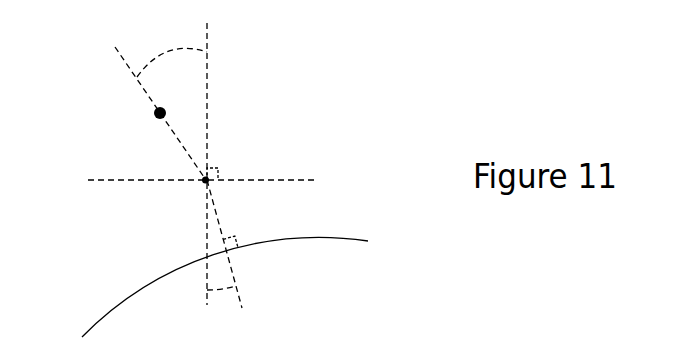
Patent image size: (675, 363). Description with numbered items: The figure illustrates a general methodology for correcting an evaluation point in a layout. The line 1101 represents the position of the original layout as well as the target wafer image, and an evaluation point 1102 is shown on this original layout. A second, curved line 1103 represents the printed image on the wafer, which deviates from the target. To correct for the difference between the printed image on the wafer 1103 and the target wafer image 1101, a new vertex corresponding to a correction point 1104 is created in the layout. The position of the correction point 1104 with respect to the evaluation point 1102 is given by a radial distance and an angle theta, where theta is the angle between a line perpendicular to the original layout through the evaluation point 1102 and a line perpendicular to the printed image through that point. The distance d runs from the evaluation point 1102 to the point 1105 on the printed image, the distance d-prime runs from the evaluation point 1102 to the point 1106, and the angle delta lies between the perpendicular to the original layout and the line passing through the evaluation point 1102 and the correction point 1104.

The line representing the original layout and target wafer image 1101 is at (300, 180).
The evaluation point 1102 is at (193, 183).
The line representing the printed image on the wafer 1103 is at (350, 240).
The correction point 1104 is at (153, 110).
The point on the printed image at distance d from the evaluation point 1105 is at (225, 253).
The point on the printed image at distance d' from the evaluation point 1106 is at (207, 257).